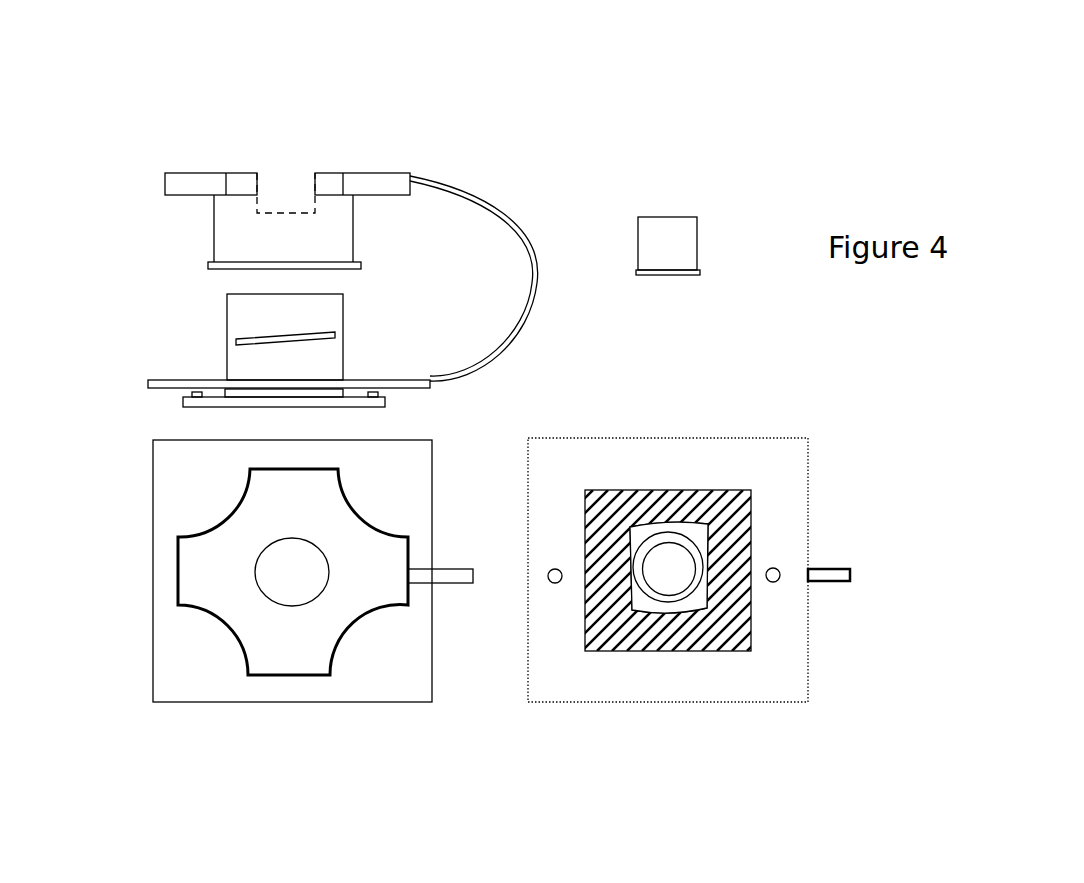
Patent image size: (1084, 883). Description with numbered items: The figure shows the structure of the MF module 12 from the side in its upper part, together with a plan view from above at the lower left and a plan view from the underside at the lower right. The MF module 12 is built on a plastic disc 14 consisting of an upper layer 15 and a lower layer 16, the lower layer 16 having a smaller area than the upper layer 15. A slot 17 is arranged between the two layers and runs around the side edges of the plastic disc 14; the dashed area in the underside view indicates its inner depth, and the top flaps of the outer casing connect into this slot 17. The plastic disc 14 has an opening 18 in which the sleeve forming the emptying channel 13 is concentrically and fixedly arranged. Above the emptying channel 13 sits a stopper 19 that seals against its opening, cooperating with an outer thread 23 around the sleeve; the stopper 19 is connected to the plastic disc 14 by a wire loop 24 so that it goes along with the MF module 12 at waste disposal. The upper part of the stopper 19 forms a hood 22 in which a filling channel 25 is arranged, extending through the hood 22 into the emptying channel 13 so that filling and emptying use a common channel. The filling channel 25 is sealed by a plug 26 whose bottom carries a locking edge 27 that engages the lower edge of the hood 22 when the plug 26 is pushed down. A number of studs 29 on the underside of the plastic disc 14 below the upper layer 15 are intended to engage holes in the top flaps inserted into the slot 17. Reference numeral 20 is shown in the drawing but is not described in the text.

The MF module 12 is at (155, 107).
The emptying channel 13 is at (227, 325).
The plastic disc 14 is at (117, 375).
The upper layer 15 is at (197, 380).
The lower layer 16 is at (185, 403).
The slot 17 is at (183, 395).
The opening 18 is at (684, 576).
The stopper 19 is at (212, 232).
The housing bottom plate 20 is at (208, 267).
The hood 22 is at (367, 172).
The outer thread 23 is at (313, 341).
The wire loop 24 is at (477, 202).
The filling channel 25 is at (297, 168).
The plug 26 is at (670, 218).
The locking edge 27 is at (702, 275).
The studs 29 is at (197, 397).